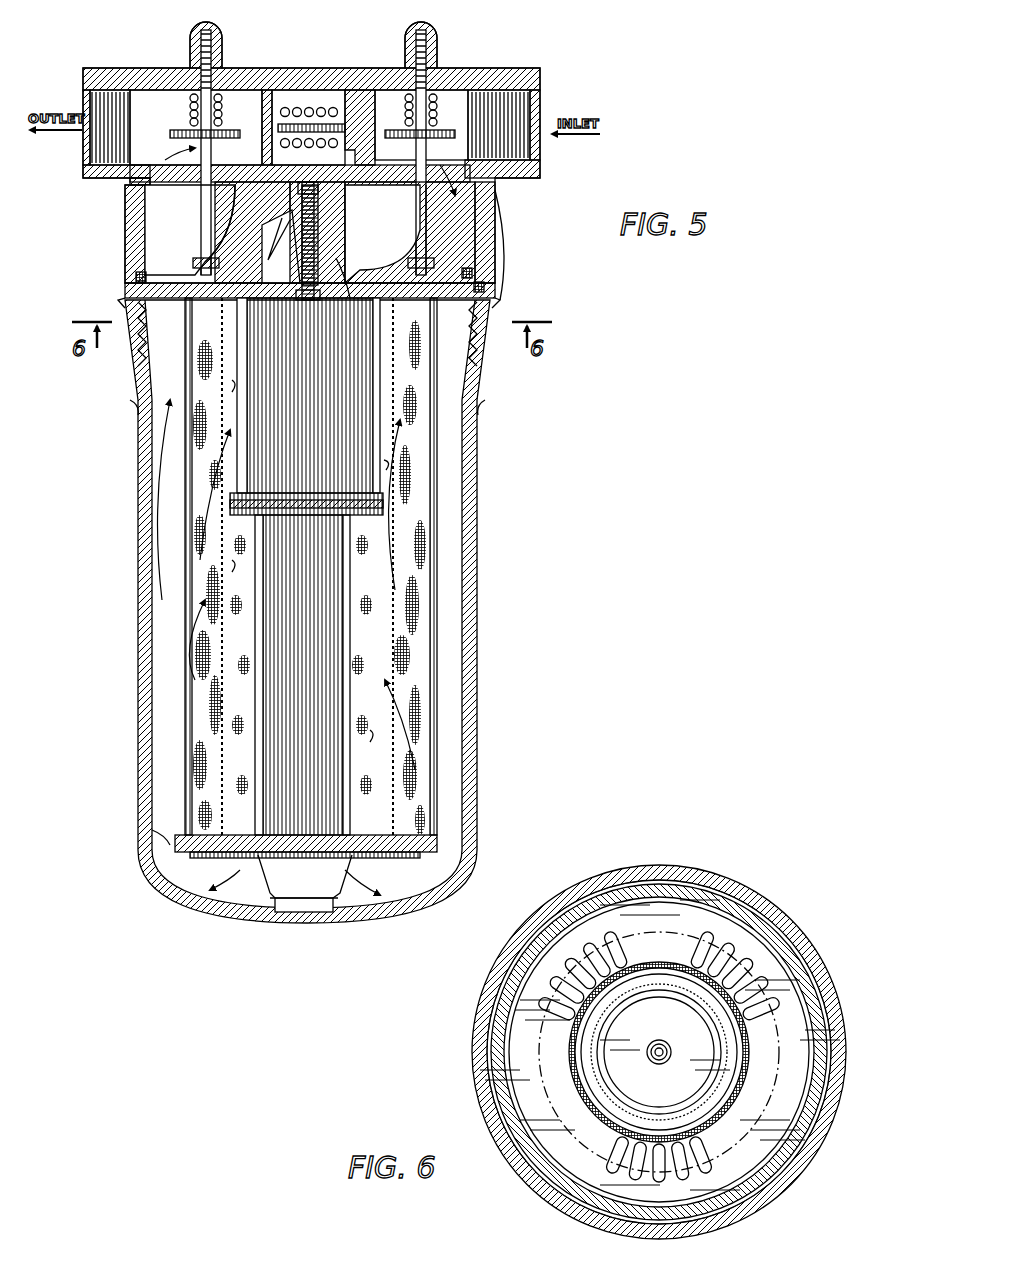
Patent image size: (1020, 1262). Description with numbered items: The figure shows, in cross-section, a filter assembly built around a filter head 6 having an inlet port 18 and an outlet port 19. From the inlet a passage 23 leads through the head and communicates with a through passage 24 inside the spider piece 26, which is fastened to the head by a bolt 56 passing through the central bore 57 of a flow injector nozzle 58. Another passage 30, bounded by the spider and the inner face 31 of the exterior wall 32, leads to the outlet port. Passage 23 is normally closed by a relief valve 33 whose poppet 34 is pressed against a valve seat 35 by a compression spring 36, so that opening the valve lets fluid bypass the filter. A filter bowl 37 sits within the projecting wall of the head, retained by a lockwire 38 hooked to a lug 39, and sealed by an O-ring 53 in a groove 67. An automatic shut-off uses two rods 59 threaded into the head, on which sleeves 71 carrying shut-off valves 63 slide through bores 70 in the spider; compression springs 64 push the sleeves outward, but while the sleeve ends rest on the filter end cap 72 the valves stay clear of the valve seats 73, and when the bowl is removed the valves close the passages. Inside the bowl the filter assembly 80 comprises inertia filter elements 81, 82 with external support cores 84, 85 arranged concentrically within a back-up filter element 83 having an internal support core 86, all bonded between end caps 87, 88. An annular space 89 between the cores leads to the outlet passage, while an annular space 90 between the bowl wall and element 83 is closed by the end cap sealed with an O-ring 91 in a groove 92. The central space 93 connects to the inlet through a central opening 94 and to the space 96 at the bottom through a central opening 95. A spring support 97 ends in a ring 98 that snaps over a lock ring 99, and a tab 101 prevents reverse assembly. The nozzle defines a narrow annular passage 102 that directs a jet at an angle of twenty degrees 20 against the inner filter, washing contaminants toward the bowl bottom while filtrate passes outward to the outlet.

In FIG. 5, the filter head 6 is at (528, 70).
In FIG. 5, the inlet port 18 is at (505, 110).
In FIG. 5, the outlet port 19 is at (92, 100).
In FIG. 5, the angle of passage 20 is at (281, 246).
In FIG. 5, the passage 23 is at (238, 92).
In FIG. 5, the through passage 24 is at (360, 260).
In FIG. 5, the spider piece 26 is at (240, 195).
In FIG. 5, the passage 30 is at (150, 216).
In FIG. 5, the inner face 31 is at (140, 234).
In FIG. 5, the exterior wall 32 is at (128, 260).
In FIG. 6, the exterior wall 32 is at (492, 1055).
In FIG. 5, the relief valve 33 is at (330, 100).
In FIG. 5, the poppet 34 is at (362, 110).
In FIG. 5, the valve seat 35 is at (342, 112).
In FIG. 5, the compression spring 36 is at (292, 110).
In FIG. 5, the filter bowl 37 is at (478, 500).
In FIG. 6, the filter bowl 37 is at (835, 988).
In FIG. 5, the lockwire 38 is at (498, 226).
In FIG. 5, the lug 39 is at (482, 412).
In FIG. 5, the O-ring 53 is at (474, 274).
In FIG. 5, the bolt 56 is at (312, 300).
In FIG. 6, the bolt 56 is at (660, 1042).
In FIG. 5, the central bore 57 is at (136, 282).
In FIG. 5, the nozzle 58 is at (321, 313).
In FIG. 6, the nozzle 58 is at (659, 1052).
In FIG. 5, the rods 59 is at (200, 50).
In FIG. 5, the shut-off valves 63 is at (226, 138).
In FIG. 5, the compression springs 64 is at (192, 112).
In FIG. 5, the groove 67 is at (486, 288).
In FIG. 5, the bores 70 is at (205, 262).
In FIG. 5, the sleeves 71 is at (200, 222).
In FIG. 5, the filter end cap 72 is at (440, 300).
In FIG. 6, the filter end cap 72 is at (540, 970).
In FIG. 5, the valve seats 73 is at (200, 145).
In FIG. 5, the filter assembly 80 is at (440, 528).
In FIG. 5, the filter element 81 is at (372, 440).
In FIG. 6, the filter element 81 is at (616, 1080).
In FIG. 5, the filter element 82 is at (372, 625).
In FIG. 5, the back-up filter element 83 is at (405, 580).
In FIG. 6, the back-up filter element 83 is at (565, 975).
In FIG. 5, the support core 84 is at (380, 396).
In FIG. 6, the support core 84 is at (668, 988).
In FIG. 5, the support core 85 is at (375, 690).
In FIG. 5, the internal support core 86 is at (386, 425).
In FIG. 6, the internal support core 86 is at (690, 995).
In FIG. 5, the end cap 87 is at (420, 305).
In FIG. 5, the end cap 88 is at (400, 854).
In FIG. 5, the annular space 89 is at (380, 468).
In FIG. 6, the annular space 89 is at (716, 1090).
In FIG. 5, the annular space 90 is at (165, 500).
In FIG. 6, the annular space 90 is at (780, 962).
In FIG. 5, the O-ring 91 is at (120, 304).
In FIG. 5, the groove 92 is at (170, 265).
In FIG. 5, the central space 93 is at (310, 566).
In FIG. 5, the central opening 94 is at (240, 300).
In FIG. 5, the central opening 95 is at (290, 835).
In FIG. 5, the space 96 is at (352, 895).
In FIG. 5, the spring support 97 is at (250, 895).
In FIG. 5, the ring 98 is at (325, 912).
In FIG. 5, the lock ring 99 is at (282, 912).
In FIG. 5, the tab 101 is at (165, 818).
In FIG. 5, the annular passage 102 is at (270, 345).